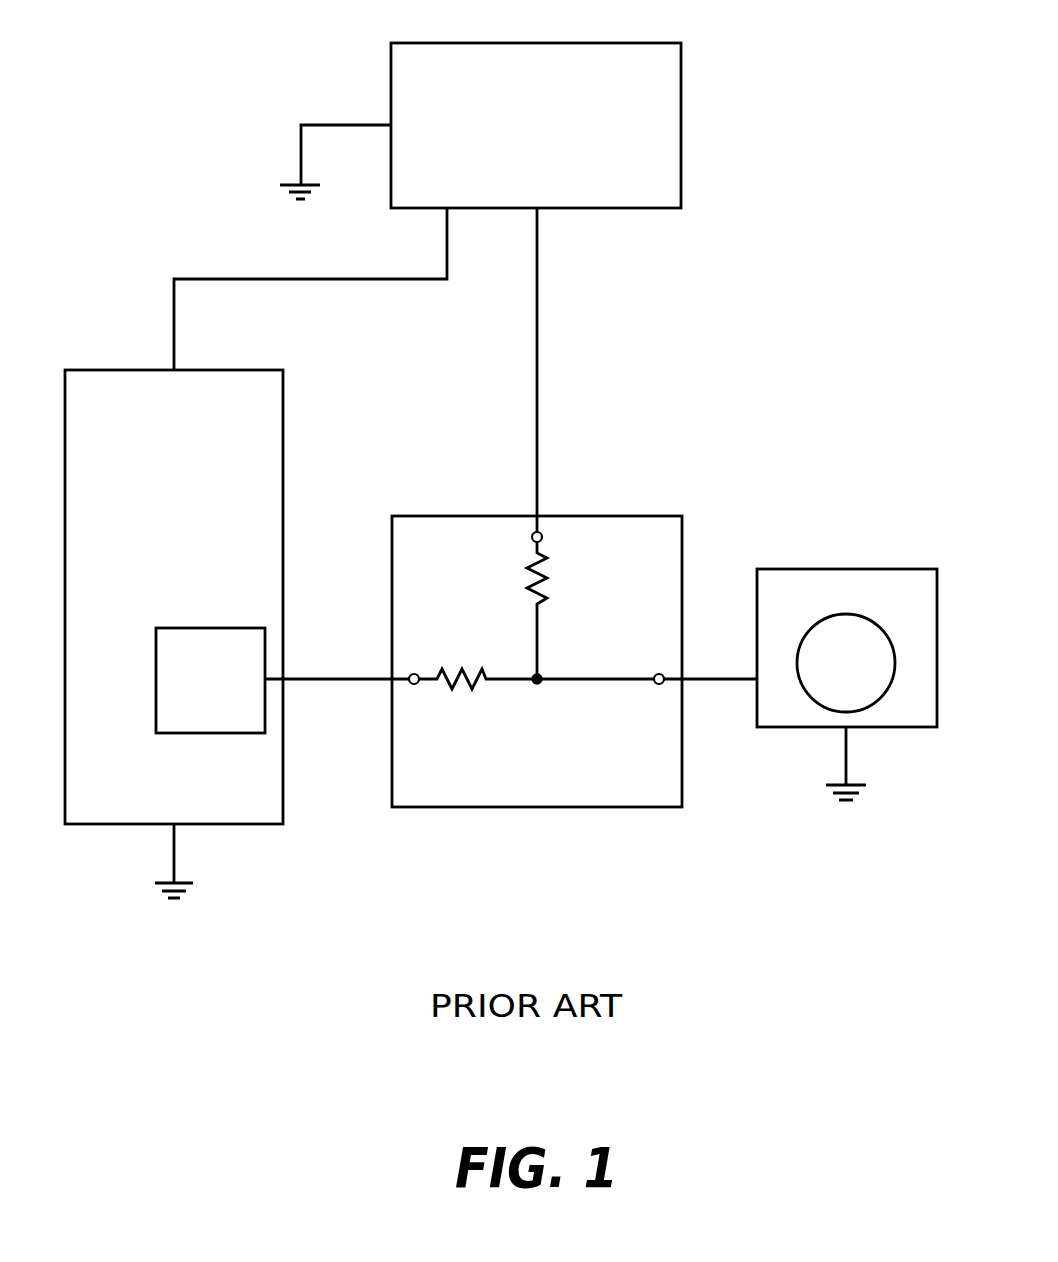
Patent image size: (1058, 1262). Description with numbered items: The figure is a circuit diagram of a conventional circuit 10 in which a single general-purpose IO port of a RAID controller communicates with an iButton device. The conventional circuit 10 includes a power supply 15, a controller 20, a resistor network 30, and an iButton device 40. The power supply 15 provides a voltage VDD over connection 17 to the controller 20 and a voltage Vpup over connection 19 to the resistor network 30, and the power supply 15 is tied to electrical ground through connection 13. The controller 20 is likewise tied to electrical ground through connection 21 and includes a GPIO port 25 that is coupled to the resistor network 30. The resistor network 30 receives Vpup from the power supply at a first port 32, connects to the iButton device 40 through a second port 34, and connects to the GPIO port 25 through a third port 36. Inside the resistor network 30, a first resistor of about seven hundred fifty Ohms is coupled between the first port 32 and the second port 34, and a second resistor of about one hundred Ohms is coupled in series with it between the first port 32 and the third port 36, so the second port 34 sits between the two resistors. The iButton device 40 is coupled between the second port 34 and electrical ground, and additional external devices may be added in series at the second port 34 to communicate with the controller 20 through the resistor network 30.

The conventional circuit 10 is at (773, 73).
The connection 13 is at (319, 125).
The power supply 15 is at (536, 125).
The connection 17 is at (256, 279).
The connection 19 is at (539, 356).
The controller 20 is at (174, 597).
The connection 21 is at (174, 848).
The GPIO port 25 is at (210, 680).
The resistor network 30 is at (537, 661).
The first port 32 is at (539, 522).
The second port 34 is at (660, 672).
The third port 36 is at (412, 673).
The iButton device 40 is at (847, 684).